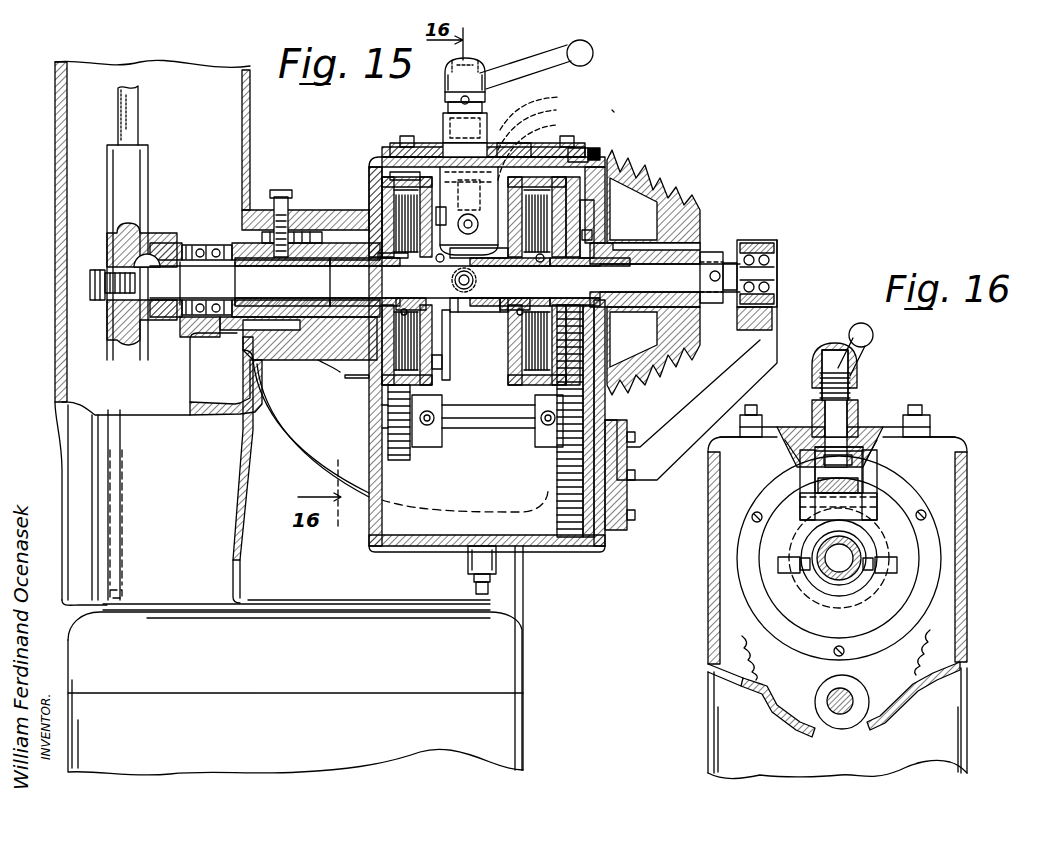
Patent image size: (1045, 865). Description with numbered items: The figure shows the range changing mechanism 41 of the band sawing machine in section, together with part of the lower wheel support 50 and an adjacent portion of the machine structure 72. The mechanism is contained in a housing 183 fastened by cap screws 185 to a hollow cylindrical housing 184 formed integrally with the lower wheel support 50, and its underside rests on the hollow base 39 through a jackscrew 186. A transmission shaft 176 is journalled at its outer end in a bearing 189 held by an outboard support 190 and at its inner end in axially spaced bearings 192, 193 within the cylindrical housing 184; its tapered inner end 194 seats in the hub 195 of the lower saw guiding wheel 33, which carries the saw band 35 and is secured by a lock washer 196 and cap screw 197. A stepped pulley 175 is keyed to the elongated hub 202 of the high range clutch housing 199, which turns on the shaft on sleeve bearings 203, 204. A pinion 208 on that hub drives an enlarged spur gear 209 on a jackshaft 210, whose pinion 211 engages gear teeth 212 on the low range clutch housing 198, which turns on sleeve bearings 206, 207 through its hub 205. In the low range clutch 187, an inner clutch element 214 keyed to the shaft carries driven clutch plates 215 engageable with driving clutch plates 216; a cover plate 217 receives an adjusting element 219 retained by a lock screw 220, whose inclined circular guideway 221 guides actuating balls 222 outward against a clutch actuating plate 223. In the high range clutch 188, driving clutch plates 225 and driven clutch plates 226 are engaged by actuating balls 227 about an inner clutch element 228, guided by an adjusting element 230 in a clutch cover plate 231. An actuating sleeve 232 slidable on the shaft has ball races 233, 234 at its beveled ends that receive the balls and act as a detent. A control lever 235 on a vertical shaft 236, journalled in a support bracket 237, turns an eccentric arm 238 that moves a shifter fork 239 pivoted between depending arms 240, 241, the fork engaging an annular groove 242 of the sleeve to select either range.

In FIG. 15, the lower saw guiding wheel 33 is at (108, 187).
In FIG. 15, the saw band 35 is at (118, 93).
In FIG. 15, the hollow base 39 is at (518, 665).
In FIG. 15, the range changing mechanism 41 is at (595, 105).
In FIG. 15, the lower wheel support 50 is at (203, 605).
In FIG. 15, the cabinet wall 72 is at (65, 540).
In FIG. 15, the stepped pulley 175 is at (695, 230).
In FIG. 15, the transmission shaft 176 is at (720, 308).
In FIG. 16, the transmission shaft 176 is at (880, 555).
In FIG. 15, the housing 183 is at (568, 548).
In FIG. 16, the housing 183 is at (962, 625).
In FIG. 15, the hollow cylindrical housing 184 is at (282, 200).
In FIG. 15, the cap screws 185 is at (372, 200).
In FIG. 15, the jackscrew 186 is at (462, 588).
In FIG. 15, the low range clutch 187 is at (337, 380).
In FIG. 15, the high range clutch 188 is at (498, 420).
In FIG. 15, the bearing 189 is at (775, 248).
In FIG. 15, the outboard support 190 is at (773, 318).
In FIG. 15, the bearing 192 is at (222, 322).
In FIG. 15, the bearing 193 is at (300, 299).
In FIG. 15, the taper 194 is at (166, 262).
In FIG. 15, the hub 195 is at (186, 305).
In FIG. 15, the lock washer 196 is at (100, 262).
In FIG. 15, the cap screw 197 is at (88, 285).
In FIG. 15, the clutch housing 198 is at (400, 176).
In FIG. 15, the clutch housing 199 is at (580, 158).
In FIG. 15, the hub 202 is at (637, 258).
In FIG. 15, the sleeve bearing 203 is at (590, 270).
In FIG. 15, the sleeve bearing 204 is at (700, 305).
In FIG. 15, the hub 205 is at (348, 345).
In FIG. 15, the sleeve bearing 206 is at (310, 270).
In FIG. 15, the sleeve bearing 207 is at (398, 283).
In FIG. 15, the pinion 208 is at (566, 258).
In FIG. 15, the spur gear 209 is at (562, 482).
In FIG. 16, the spur gear 209 is at (940, 668).
In FIG. 15, the jackshaft 210 is at (455, 428).
In FIG. 16, the jackshaft 210 is at (835, 708).
In FIG. 15, the pinion 211 is at (398, 452).
In FIG. 15, the gear teeth 212 is at (395, 162).
In FIG. 15, the inner clutch element 214 is at (396, 312).
In FIG. 15, the driven clutch plates 215 is at (366, 375).
In FIG. 15, the driving clutch plates 216 is at (436, 368).
In FIG. 15, the cover plate 217 is at (440, 355).
In FIG. 15, the adjusting element 219 is at (440, 328).
In FIG. 15, the lock screw 220 is at (440, 238).
In FIG. 15, the circular guideway 221 is at (392, 282).
In FIG. 15, the actuating balls 222 is at (440, 342).
In FIG. 15, the clutch actuating plate 223 is at (455, 145).
In FIG. 15, the driving clutch plates 225 is at (496, 378).
In FIG. 15, the driven clutch plates 226 is at (592, 338).
In FIG. 15, the clutch actuating balls 227 is at (532, 290).
In FIG. 15, the inner clutch element 228 is at (565, 293).
In FIG. 15, the adjusting element 230 is at (486, 305).
In FIG. 15, the clutch cover plate 231 is at (548, 160).
In FIG. 16, the clutch cover plate 231 is at (930, 580).
In FIG. 15, the actuating sleeve 232 is at (498, 300).
In FIG. 16, the actuating sleeve 232 is at (830, 565).
In FIG. 15, the ball race 233 is at (470, 276).
In FIG. 15, the ball race 234 is at (484, 340).
In FIG. 15, the control lever 235 is at (505, 62).
In FIG. 16, the control lever 235 is at (865, 362).
In FIG. 15, the vertical shaft 236 is at (510, 88).
In FIG. 16, the vertical shaft 236 is at (840, 412).
In FIG. 15, the support bracket 237 is at (420, 172).
In FIG. 16, the support bracket 237 is at (912, 420).
In FIG. 15, the eccentric arm 238 is at (512, 104).
In FIG. 16, the eccentric arm 238 is at (870, 465).
In FIG. 15, the shifter fork 239 is at (512, 120).
In FIG. 16, the shifter fork 239 is at (877, 508).
In FIG. 16, the arm 240 is at (800, 472).
In FIG. 16, the arm 241 is at (877, 487).
In FIG. 15, the annular groove 242 is at (448, 328).
In FIG. 16, the annular groove 242 is at (825, 565).